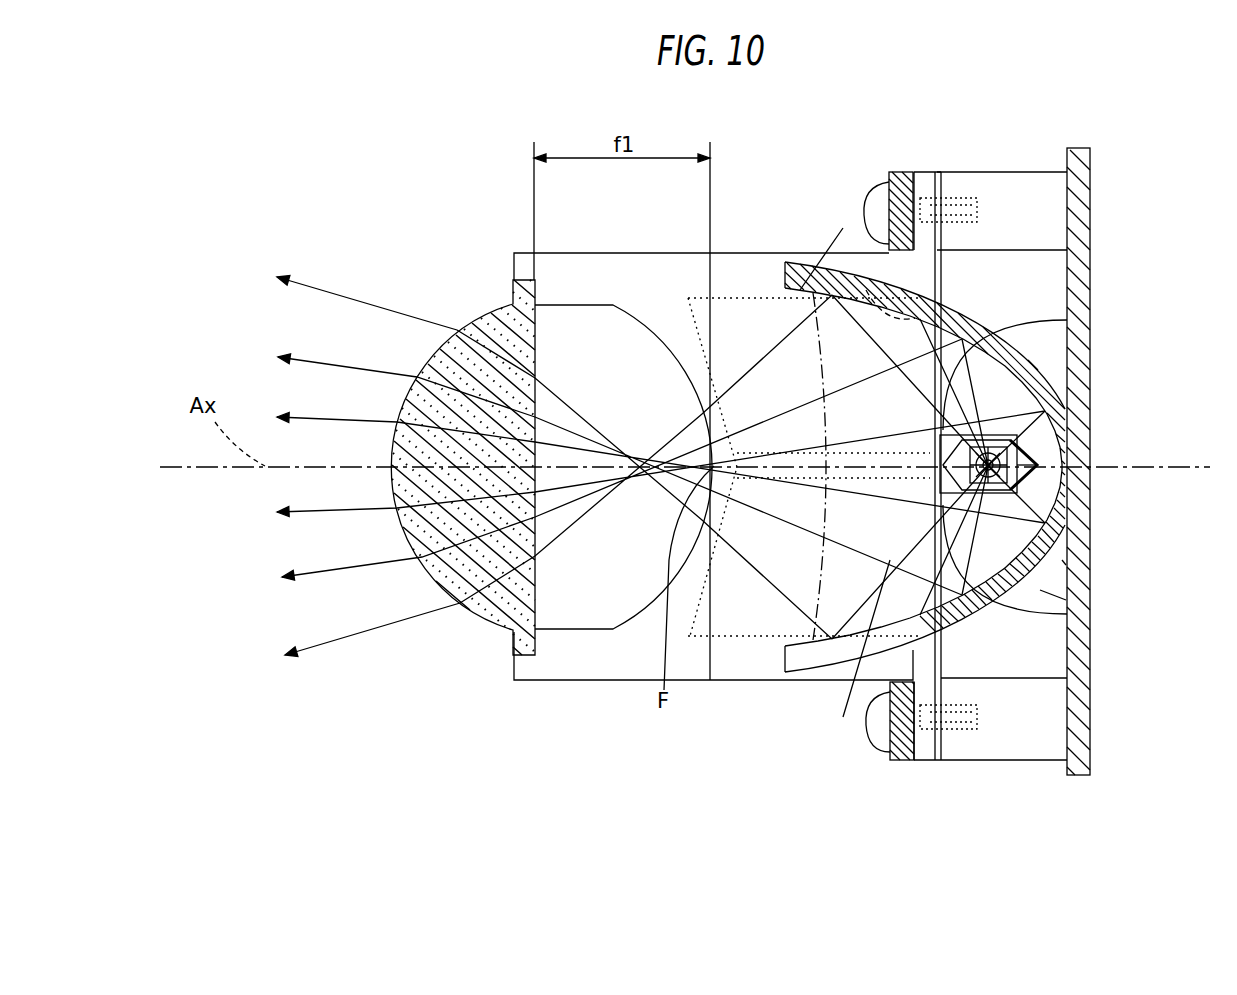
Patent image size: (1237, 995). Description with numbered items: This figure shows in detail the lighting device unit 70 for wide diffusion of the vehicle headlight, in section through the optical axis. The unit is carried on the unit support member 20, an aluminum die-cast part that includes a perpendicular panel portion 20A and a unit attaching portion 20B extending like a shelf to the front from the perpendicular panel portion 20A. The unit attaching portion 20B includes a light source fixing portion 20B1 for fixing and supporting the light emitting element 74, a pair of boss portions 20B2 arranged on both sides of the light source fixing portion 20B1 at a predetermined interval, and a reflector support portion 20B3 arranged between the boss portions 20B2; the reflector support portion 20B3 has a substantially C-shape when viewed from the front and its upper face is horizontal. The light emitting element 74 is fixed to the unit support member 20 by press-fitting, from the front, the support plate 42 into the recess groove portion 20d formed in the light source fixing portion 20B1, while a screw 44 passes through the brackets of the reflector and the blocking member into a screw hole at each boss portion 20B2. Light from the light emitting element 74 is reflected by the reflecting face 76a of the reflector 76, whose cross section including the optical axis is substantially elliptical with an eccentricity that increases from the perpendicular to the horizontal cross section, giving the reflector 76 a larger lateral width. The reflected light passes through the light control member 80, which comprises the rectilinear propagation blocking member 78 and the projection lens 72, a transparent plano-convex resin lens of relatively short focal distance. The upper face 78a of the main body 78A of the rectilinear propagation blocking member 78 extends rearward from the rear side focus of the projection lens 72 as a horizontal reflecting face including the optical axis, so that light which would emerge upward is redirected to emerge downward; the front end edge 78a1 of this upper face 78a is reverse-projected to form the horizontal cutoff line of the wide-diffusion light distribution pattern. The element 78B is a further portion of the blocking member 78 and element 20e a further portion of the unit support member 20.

The lighting device unit for wide diffusion 70 is at (457, 196).
The projection lens 72 is at (483, 308).
The light control member 80 is at (514, 677).
The rectilinear propagation blocking member 78 is at (732, 505).
The main body 78A is at (773, 615).
The fixed lens 78B is at (603, 653).
The upper face 78a is at (748, 320).
The front end edge 78a1 is at (706, 438).
The reflector 76 is at (1050, 383).
The reflecting face 76a is at (866, 290).
The light emitting element 74 is at (1032, 441).
The screw 44 is at (870, 210).
The support plate 42 is at (880, 690).
The unit support member 20 is at (1122, 258).
The perpendicular panel portion 20A is at (1095, 549).
The unit attaching portion 20B is at (1035, 472).
The light source fixing portion 20B1 is at (1005, 343).
The boss portions 20B2 is at (1032, 215).
The reflector support portion 20B3 is at (1047, 610).
The recess groove portion 20d is at (1037, 470).
The rib 20e is at (943, 428).